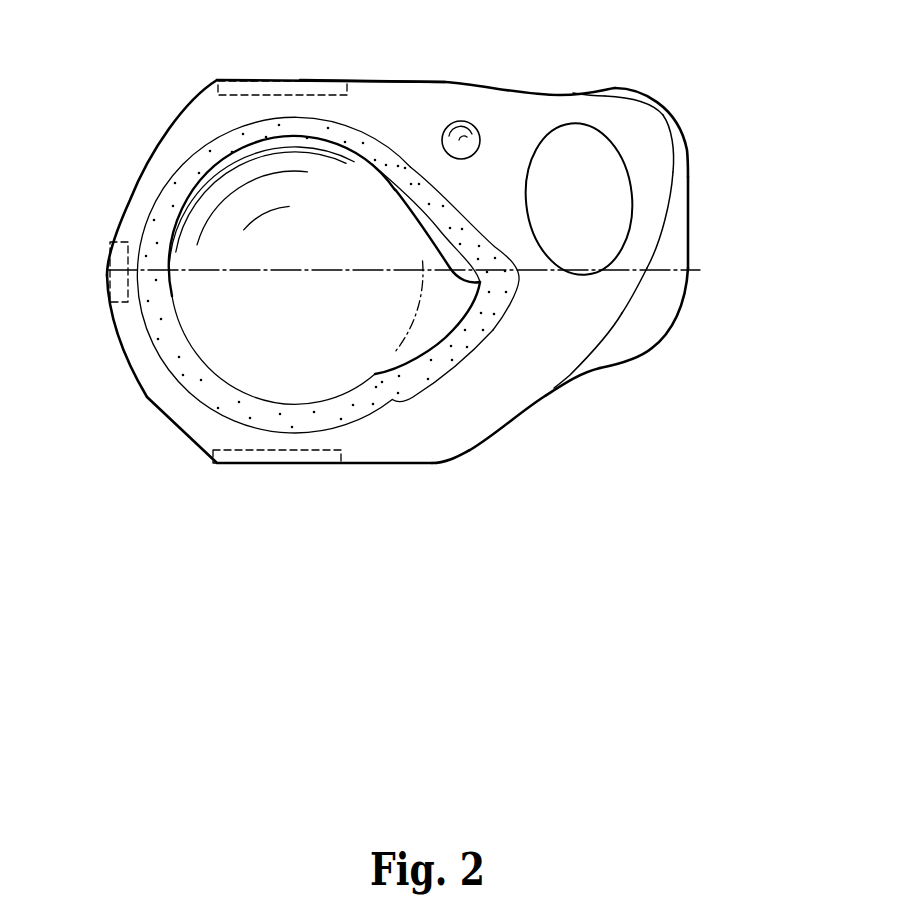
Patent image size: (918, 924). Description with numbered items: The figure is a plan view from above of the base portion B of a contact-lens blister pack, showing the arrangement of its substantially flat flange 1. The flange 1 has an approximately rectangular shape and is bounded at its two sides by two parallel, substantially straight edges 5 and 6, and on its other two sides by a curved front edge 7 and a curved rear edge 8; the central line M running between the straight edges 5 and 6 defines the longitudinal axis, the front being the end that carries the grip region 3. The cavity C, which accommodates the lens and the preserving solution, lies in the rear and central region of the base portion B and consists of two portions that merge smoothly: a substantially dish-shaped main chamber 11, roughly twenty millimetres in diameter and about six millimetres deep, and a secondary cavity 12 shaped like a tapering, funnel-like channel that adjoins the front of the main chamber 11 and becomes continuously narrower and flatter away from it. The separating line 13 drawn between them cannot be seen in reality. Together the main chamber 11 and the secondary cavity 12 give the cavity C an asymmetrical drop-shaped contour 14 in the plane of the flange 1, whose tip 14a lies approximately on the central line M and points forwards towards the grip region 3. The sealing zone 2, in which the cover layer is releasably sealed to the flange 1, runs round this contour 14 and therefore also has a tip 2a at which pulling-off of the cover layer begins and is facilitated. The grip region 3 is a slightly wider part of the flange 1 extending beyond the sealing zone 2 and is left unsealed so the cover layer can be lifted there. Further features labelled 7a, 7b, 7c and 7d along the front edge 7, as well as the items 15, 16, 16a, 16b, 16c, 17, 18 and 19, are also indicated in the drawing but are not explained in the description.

The base portion B is at (128, 88).
The flange 1 is at (421, 105).
The sealing zone 2 is at (224, 152).
The tip of the sealing zone 2a is at (512, 283).
The grip region 3 is at (602, 96).
The straight edge 5 is at (394, 75).
The straight edge 6 is at (380, 468).
The curved front edge 7 is at (610, 337).
The arm upper portion 7a is at (630, 125).
The arm transition 7b is at (626, 313).
The arm side portion 7c is at (678, 186).
The arm junction 7d is at (579, 85).
The curved rear edge 8 is at (153, 148).
The main chamber 11 is at (295, 325).
The secondary cavity 12 is at (437, 317).
The separating line 13 is at (413, 318).
The drop-shaped contour 14 is at (400, 368).
The tip of the drop 14a is at (468, 274).
The opening 15 is at (558, 156).
The lobe 16 is at (662, 300).
The lobe side edge 16a is at (691, 266).
The lobe upper edge 16b is at (640, 88).
The lobe lower edge 16c is at (613, 372).
The left tab 17 is at (107, 292).
The upper tab 18 is at (283, 92).
The lower tab 19 is at (312, 460).
The cavity C is at (222, 345).
The central line M is at (326, 270).